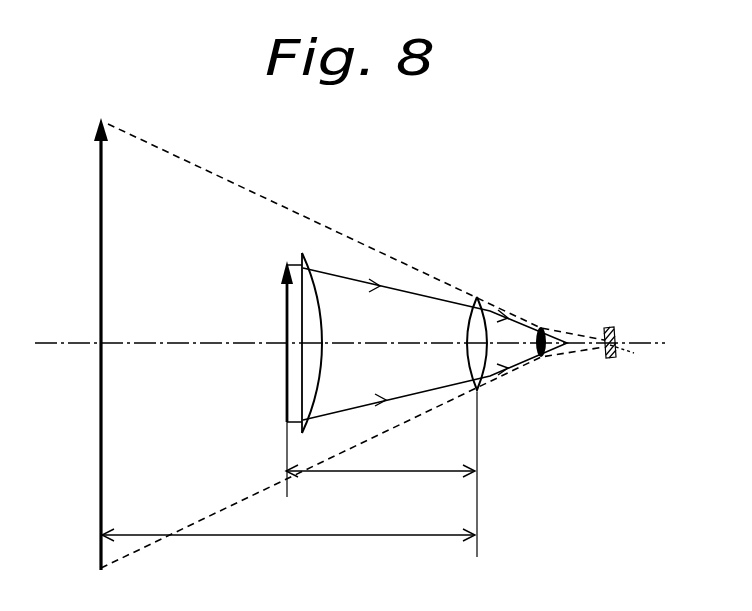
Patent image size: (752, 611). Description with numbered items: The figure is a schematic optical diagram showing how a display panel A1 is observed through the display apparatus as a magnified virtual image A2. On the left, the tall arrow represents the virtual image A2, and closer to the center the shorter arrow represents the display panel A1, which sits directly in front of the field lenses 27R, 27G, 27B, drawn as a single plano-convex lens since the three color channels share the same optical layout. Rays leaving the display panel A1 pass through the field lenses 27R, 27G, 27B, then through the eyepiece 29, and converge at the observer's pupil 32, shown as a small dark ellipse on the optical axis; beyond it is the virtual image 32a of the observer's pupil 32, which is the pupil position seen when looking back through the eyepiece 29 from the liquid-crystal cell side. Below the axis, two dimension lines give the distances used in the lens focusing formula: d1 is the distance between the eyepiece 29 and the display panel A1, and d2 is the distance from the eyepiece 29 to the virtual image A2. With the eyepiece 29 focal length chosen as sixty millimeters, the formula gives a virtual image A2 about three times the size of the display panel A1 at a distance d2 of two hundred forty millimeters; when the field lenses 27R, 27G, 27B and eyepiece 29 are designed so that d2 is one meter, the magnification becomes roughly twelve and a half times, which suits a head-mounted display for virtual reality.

The display panel A1 is at (284, 297).
The virtual image A2 is at (99, 297).
The field lens 27R is at (382, 343).
The field lens 27G is at (382, 343).
The field lens 27B is at (316, 366).
The eyepiece 29 is at (486, 383).
The observer's pupil 32 is at (545, 328).
The virtual image of the observer's pupil 32a is at (634, 337).
The distance between the eyepiece and the display panel d1 is at (418, 469).
The distance from the eyepiece to the virtual image d2 is at (358, 533).